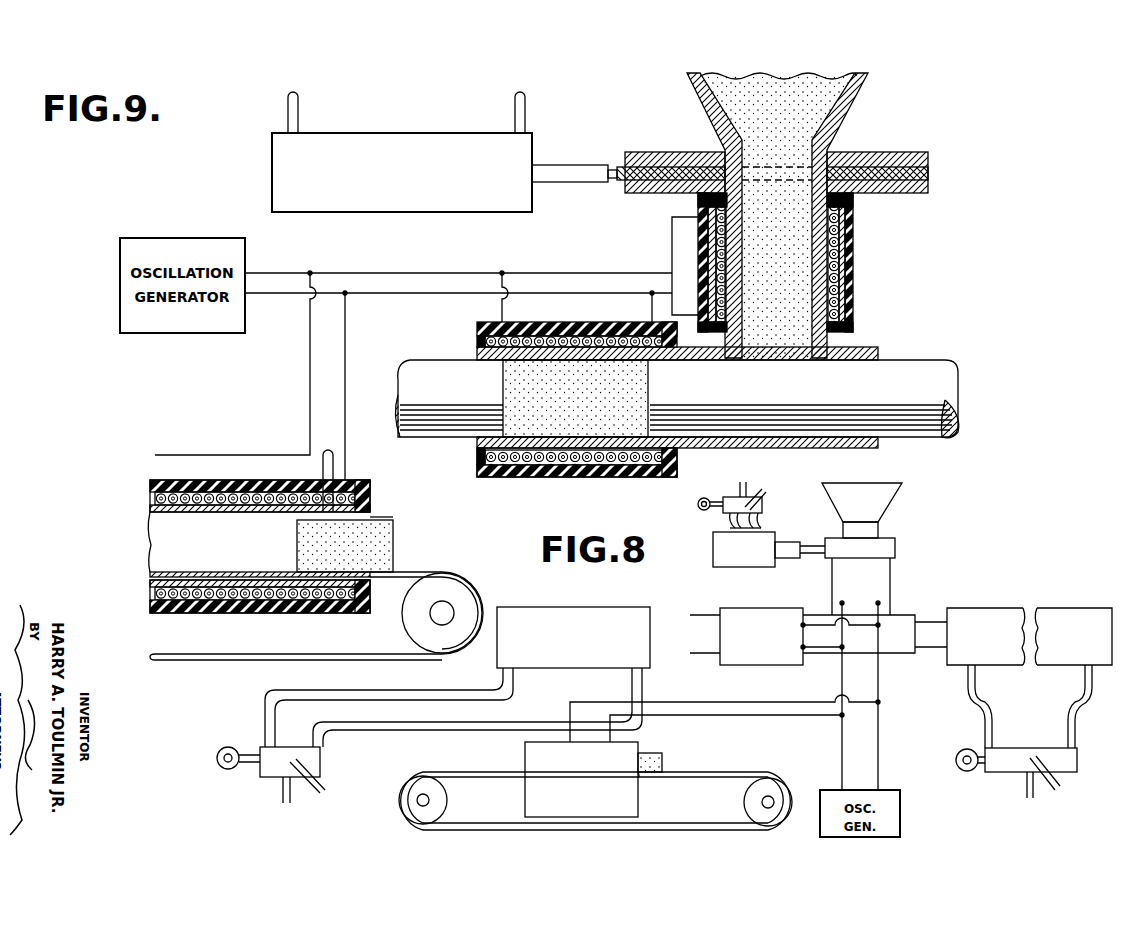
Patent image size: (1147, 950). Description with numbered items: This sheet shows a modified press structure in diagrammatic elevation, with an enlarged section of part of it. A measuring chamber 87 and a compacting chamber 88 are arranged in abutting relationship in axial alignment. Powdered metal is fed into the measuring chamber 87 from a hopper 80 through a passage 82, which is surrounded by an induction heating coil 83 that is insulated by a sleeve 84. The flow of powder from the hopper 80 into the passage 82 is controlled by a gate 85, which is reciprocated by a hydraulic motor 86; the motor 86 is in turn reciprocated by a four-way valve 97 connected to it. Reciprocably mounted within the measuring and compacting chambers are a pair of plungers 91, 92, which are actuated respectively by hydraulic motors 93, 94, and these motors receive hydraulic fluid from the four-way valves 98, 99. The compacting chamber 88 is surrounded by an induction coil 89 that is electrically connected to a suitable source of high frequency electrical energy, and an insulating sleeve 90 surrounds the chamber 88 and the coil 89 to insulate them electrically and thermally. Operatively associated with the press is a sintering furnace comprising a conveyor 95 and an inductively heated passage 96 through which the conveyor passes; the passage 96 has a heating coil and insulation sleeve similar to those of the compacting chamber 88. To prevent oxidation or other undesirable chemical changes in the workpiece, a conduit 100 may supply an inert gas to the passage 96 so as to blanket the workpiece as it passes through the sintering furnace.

In FIG. 9, the hopper 80 is at (840, 118).
In FIG. 8, the hopper 80 is at (866, 508).
In FIG. 9, the passage 82 is at (811, 250).
In FIG. 8, the passage 82 is at (860, 576).
In FIG. 9, the induction heating coil 83 is at (845, 300).
In FIG. 9, the sleeve 84 is at (853, 322).
In FIG. 9, the gate 85 is at (928, 173).
In FIG. 9, the hydraulic motor 86 is at (428, 168).
In FIG. 8, the hydraulic motor 86 is at (763, 548).
In FIG. 9, the measuring chamber 87 is at (846, 448).
In FIG. 8, the measuring chamber 87 is at (907, 622).
In FIG. 9, the compacting chamber 88 is at (678, 458).
In FIG. 8, the compacting chamber 88 is at (770, 644).
In FIG. 9, the induction coil 89 is at (512, 470).
In FIG. 9, the insulating sleeve 90 is at (583, 470).
In FIG. 9, the plunger 91 is at (443, 370).
In FIG. 9, the plunger 92 is at (892, 372).
In FIG. 8, the hydraulic motor 93 is at (590, 644).
In FIG. 8, the hydraulic motor 94 is at (1050, 615).
In FIG. 9, the conveyor 95 is at (425, 572).
In FIG. 8, the conveyor 95 is at (750, 772).
In FIG. 9, the inductively heated passage 96 is at (240, 541).
In FIG. 8, the inductively heated passage 96 is at (590, 780).
In FIG. 8, the four-way valve 97 is at (762, 508).
In FIG. 8, the four-way valve 98 is at (280, 757).
In FIG. 8, the four-way valve 99 is at (1017, 756).
In FIG. 9, the conduit 100 is at (333, 467).